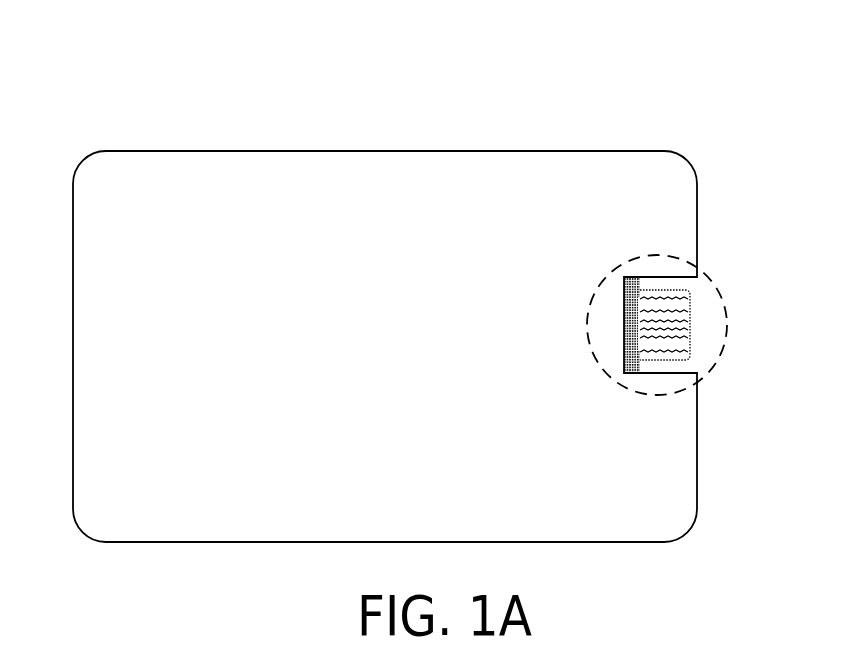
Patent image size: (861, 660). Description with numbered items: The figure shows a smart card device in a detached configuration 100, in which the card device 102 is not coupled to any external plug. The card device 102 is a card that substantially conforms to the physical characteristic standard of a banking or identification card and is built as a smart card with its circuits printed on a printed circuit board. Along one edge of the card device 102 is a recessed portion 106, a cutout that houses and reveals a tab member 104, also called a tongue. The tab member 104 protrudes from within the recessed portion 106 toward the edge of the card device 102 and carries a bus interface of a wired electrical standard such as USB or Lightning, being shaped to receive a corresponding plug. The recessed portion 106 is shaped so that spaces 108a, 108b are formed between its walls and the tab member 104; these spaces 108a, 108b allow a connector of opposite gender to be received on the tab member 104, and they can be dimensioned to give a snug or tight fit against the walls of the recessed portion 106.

The detached configuration 100 is at (84, 77).
The card device 102 is at (580, 151).
The tab member 104 is at (690, 329).
The recessed portion 106 is at (725, 340).
The space 108a is at (649, 277).
The space 108b is at (651, 375).